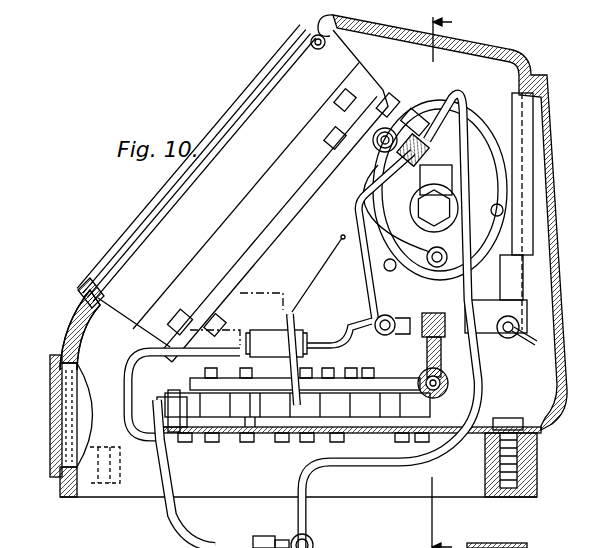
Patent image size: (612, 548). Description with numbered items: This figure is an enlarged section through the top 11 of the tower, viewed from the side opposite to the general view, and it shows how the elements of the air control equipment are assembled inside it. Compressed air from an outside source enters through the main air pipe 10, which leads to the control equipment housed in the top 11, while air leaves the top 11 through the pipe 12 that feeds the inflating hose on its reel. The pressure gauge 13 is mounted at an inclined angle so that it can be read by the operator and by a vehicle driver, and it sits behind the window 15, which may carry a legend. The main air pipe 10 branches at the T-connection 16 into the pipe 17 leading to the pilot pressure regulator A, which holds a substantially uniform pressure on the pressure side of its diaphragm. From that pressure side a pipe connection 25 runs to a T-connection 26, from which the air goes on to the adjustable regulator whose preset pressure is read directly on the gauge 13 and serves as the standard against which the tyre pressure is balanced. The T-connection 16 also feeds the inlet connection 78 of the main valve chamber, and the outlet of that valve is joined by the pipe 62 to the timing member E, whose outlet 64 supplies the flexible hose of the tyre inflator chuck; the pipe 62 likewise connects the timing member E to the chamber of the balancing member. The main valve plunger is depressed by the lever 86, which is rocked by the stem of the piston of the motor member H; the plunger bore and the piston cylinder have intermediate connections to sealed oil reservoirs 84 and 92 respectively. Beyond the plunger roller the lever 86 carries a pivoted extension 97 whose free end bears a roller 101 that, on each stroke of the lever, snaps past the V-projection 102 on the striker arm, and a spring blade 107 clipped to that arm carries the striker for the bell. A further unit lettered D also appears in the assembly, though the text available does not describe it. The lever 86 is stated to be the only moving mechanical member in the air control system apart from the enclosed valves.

The main air pipe 10 is at (316, 541).
The top of the tower 11 is at (494, 47).
The pipe 12 is at (455, 281).
The pressure gauge 13 is at (212, 221).
The window 15 is at (50, 418).
The T-connection (branch) 16 is at (273, 541).
The pipe 17 is at (480, 90).
The pipe connection 25 is at (418, 237).
The T-connection 26 is at (397, 122).
The pipe 62 is at (537, 330).
The outlet 64 is at (398, 313).
The inlet connection 78 is at (214, 545).
The sealed oil reservoir 84 is at (324, 248).
The lever 86 is at (280, 425).
The remote sealed oil reservoir 92 is at (378, 178).
The extension 97 is at (262, 420).
The roller 101 is at (240, 420).
The V-projection 102 is at (212, 420).
The spring blade 107 is at (182, 420).
The pilot pressure regulator A is at (440, 190).
The fitting D is at (438, 344).
The timing member E is at (528, 278).
The motor member H is at (412, 410).